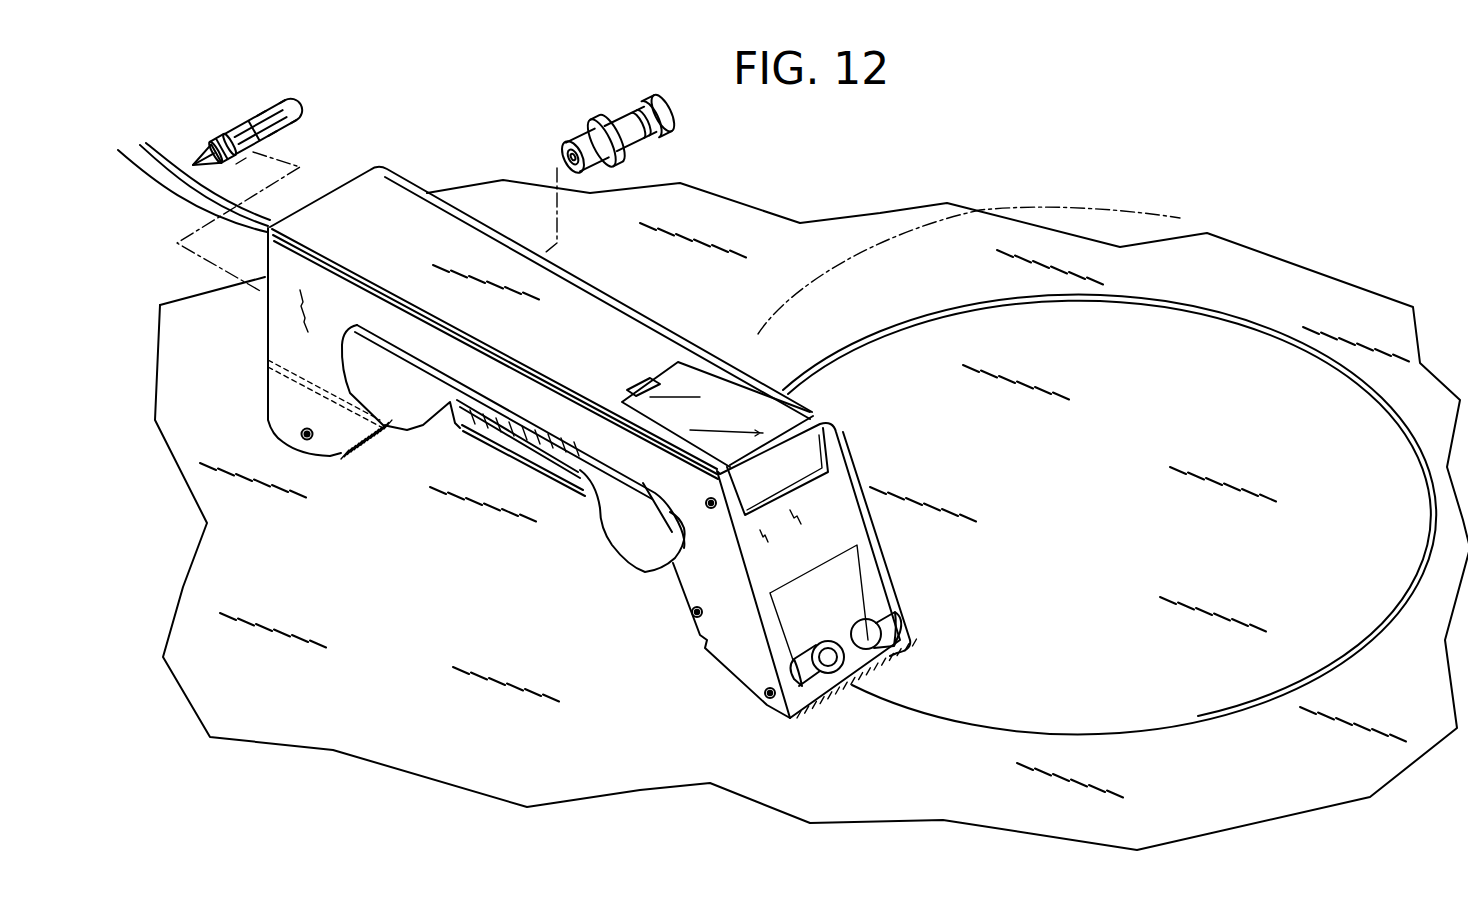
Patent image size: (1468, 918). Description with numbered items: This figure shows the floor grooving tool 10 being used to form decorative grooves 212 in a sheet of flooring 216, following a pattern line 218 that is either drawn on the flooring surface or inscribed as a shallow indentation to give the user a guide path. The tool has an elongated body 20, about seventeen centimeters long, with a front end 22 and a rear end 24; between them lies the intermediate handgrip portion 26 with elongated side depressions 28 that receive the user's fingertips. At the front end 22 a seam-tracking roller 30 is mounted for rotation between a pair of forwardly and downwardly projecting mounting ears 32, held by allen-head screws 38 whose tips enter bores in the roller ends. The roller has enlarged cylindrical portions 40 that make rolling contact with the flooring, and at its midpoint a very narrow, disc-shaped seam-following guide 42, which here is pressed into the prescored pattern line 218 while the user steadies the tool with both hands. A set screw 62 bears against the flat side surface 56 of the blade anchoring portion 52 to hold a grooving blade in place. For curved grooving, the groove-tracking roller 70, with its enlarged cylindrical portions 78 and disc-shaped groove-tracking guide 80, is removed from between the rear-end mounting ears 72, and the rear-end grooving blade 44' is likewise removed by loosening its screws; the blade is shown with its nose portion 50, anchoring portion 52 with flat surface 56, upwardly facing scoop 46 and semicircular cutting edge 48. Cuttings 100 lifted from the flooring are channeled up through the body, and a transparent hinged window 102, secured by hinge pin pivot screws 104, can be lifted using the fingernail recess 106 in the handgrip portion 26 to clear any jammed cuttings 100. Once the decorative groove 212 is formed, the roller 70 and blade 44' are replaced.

The floor grooving tool 10 is at (740, 240).
The body 20 is at (644, 300).
The front end 22 is at (823, 500).
The rear end 24 is at (381, 188).
The intermediate handgrip portion 26 is at (600, 316).
The side depressions 28 is at (630, 503).
The seam-tracking roller 30 is at (888, 680).
The mounting ears 32 is at (884, 590).
The allen-head screws 38 is at (764, 700).
The enlarged cylindrical-shaped portions 40 is at (874, 630).
The seam-following guide 42 is at (816, 645).
The rear-end grooving blade 44' is at (246, 104).
The scoop 46 is at (205, 150).
The cutting edge 48 is at (195, 163).
The nose portion 50 is at (222, 170).
The anchoring portion 52 is at (307, 100).
The flat side surface 56 is at (282, 122).
The set screw 62 is at (688, 617).
The groove-tracking roller 70 is at (586, 102).
The rear-end mounting ears 72 is at (288, 403).
The enlarged cylindrical portions 78 is at (652, 100).
The groove-tracking guide 80 is at (630, 152).
The cuttings 100 is at (175, 208).
The hinged window 102 is at (722, 396).
The hinge pin pivot screws 104 is at (705, 507).
The fingernail recess 106 is at (632, 385).
The decorative grooves 212 is at (1214, 312).
The sheet of flooring 216 is at (1301, 306).
The pattern line 218 is at (1046, 733).